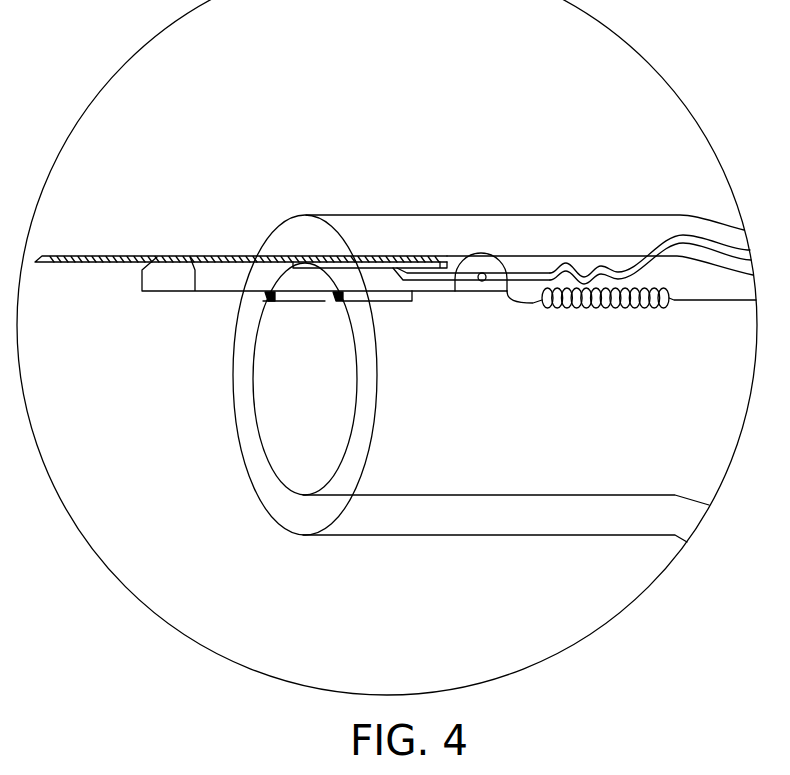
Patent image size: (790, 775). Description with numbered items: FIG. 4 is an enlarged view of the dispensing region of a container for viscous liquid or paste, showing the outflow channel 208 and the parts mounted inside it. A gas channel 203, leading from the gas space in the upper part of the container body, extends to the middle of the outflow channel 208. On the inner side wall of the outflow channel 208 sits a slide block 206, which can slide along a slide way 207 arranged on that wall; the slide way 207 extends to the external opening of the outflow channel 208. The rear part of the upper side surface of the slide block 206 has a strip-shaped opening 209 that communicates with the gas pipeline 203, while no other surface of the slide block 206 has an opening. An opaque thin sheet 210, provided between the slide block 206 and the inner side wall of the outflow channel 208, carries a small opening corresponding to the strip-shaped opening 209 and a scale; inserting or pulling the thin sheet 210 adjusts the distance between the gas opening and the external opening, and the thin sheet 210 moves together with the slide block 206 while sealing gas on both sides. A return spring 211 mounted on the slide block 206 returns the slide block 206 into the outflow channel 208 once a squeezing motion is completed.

The gas channel 203 is at (520, 278).
The slide block 206 is at (175, 282).
The slide way 207 is at (302, 297).
The outflow channel 208 is at (305, 395).
The strip-shaped opening 209 is at (435, 265).
The thin sheet 210 is at (75, 257).
The return spring 211 is at (602, 293).